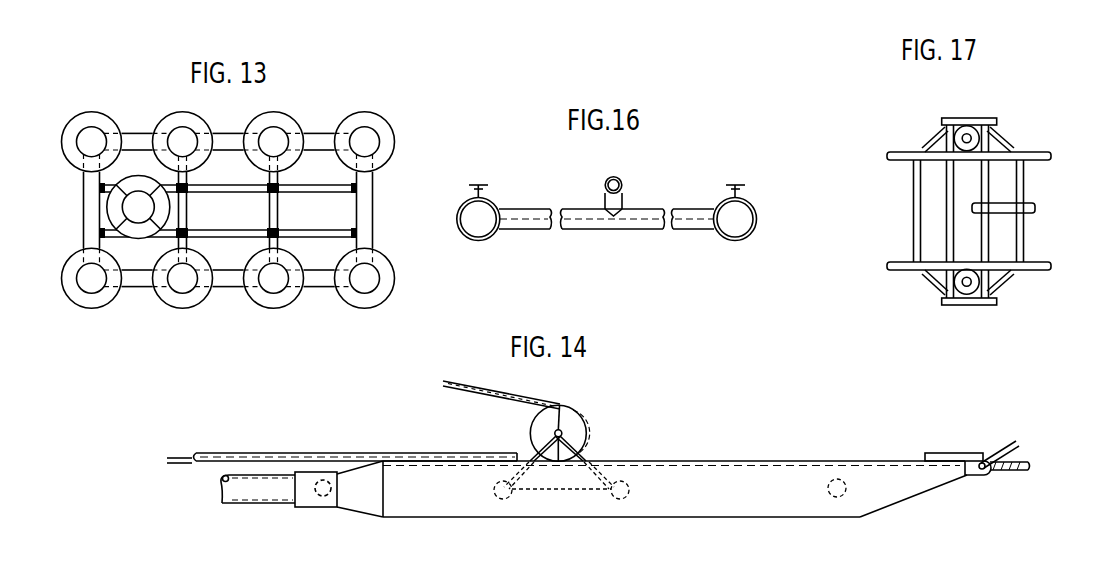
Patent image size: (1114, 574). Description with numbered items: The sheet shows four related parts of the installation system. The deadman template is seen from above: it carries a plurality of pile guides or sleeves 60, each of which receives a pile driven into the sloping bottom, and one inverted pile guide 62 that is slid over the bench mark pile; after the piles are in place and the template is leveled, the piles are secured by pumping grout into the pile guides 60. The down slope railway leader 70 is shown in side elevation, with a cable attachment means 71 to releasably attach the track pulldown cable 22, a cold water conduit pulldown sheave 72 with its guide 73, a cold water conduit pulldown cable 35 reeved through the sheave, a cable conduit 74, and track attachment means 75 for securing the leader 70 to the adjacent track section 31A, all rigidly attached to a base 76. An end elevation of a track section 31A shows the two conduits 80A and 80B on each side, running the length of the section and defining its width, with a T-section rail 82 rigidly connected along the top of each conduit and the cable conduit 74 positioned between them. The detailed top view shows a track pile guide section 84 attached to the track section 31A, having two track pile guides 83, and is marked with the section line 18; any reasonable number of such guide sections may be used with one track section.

In FIG. 13, the template pile guide 60 is at (166, 122).
In FIG. 13, the inverted pile guide 62 is at (117, 203).
In FIG. 16, the cable conduit 74 is at (617, 178).
In FIG. 17, the cable conduit 74 is at (1027, 205).
In FIG. 14, the cable conduit 74 is at (248, 456).
In FIG. 16, the conduit 80A is at (470, 238).
In FIG. 17, the conduit 80A is at (1037, 153).
In FIG. 16, the conduit 80B is at (745, 238).
In FIG. 17, the conduit 80B is at (1030, 268).
In FIG. 16, the rail 82 is at (478, 183).
In FIG. 17, the track pile guide 83 is at (972, 130).
In FIG. 17, the track pile guide section 84 is at (1022, 230).
In FIG. 17, the section line 18 is at (970, 112).
In FIG. 14, the cold water conduit pulldown cable 35 is at (175, 458).
In FIG. 14, the track section 31A is at (270, 490).
In FIG. 14, the track attachment means 75 is at (317, 504).
In FIG. 14, the guide 73 is at (583, 416).
In FIG. 14, the railway leader 70 is at (722, 426).
In FIG. 14, the cold water conduit pulldown sheave 72 is at (614, 434).
In FIG. 14, the base 76 is at (628, 518).
In FIG. 14, the cable attachment means 71 is at (950, 453).
In FIG. 14, the track pulldown cable 22 is at (1011, 442).